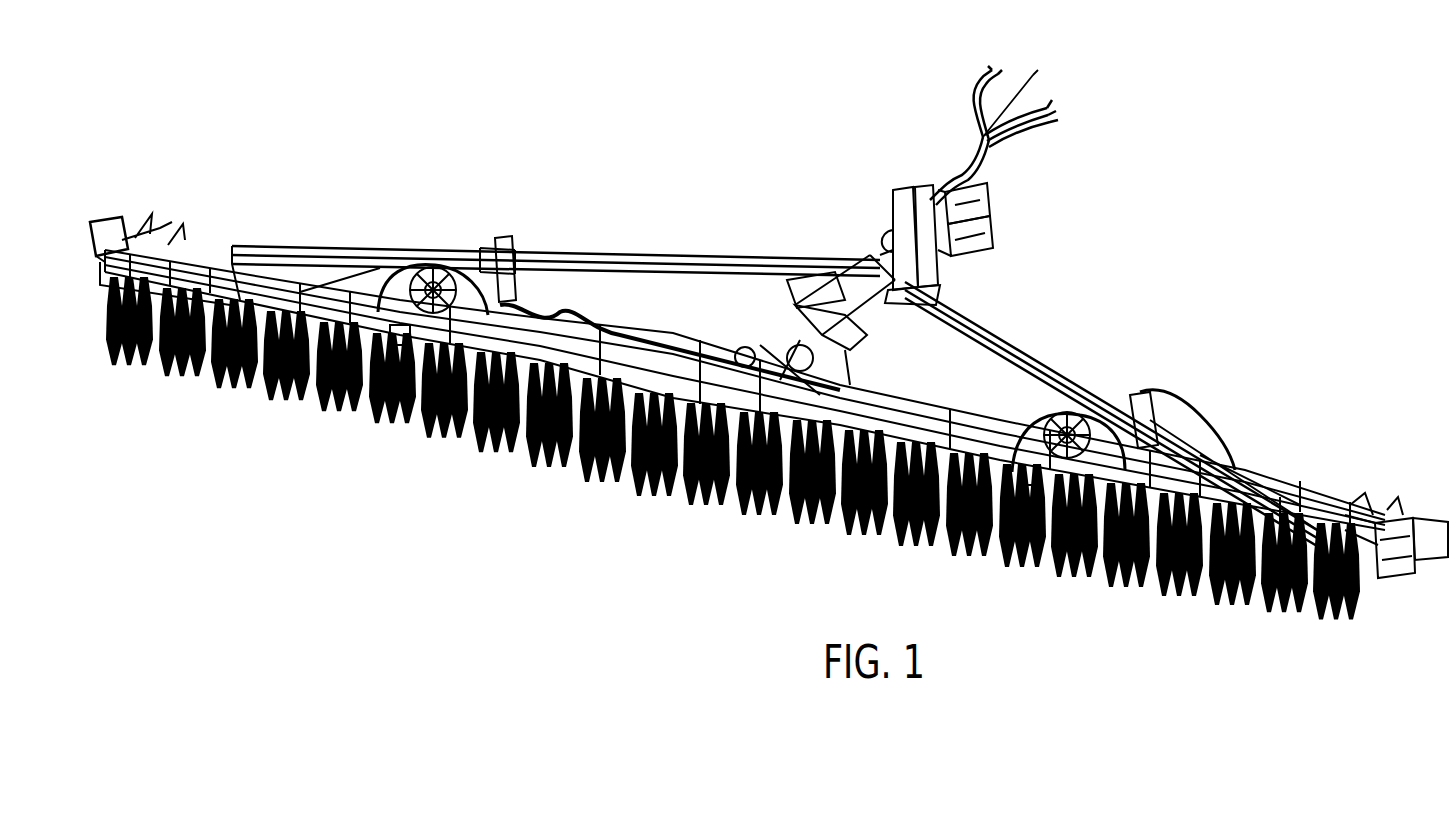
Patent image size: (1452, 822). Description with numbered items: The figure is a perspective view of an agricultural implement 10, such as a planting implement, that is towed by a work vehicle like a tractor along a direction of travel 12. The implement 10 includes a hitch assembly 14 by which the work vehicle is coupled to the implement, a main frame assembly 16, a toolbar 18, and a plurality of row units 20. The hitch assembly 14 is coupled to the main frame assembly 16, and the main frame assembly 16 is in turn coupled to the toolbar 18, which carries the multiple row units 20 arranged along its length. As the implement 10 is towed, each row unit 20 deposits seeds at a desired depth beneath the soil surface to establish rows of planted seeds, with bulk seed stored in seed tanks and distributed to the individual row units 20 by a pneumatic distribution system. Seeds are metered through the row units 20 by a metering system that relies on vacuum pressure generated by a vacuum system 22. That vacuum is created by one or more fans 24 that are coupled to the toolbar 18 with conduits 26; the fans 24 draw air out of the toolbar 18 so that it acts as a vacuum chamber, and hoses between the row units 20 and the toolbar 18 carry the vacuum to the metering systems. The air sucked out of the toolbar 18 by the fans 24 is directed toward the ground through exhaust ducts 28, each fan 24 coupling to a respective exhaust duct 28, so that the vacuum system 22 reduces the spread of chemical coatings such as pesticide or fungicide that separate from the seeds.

The agricultural implement 10 is at (711, 153).
The direction of travel 12 is at (900, 150).
The hitch assembly 14 is at (1105, 130).
The main frame assembly 16 is at (368, 188).
The toolbar 18 is at (1417, 523).
The row units 20 is at (120, 355).
The vacuum system 22 is at (1225, 365).
The fans 24 is at (440, 280).
The conduits 26 is at (385, 250).
The exhaust ducts 28 is at (398, 345).